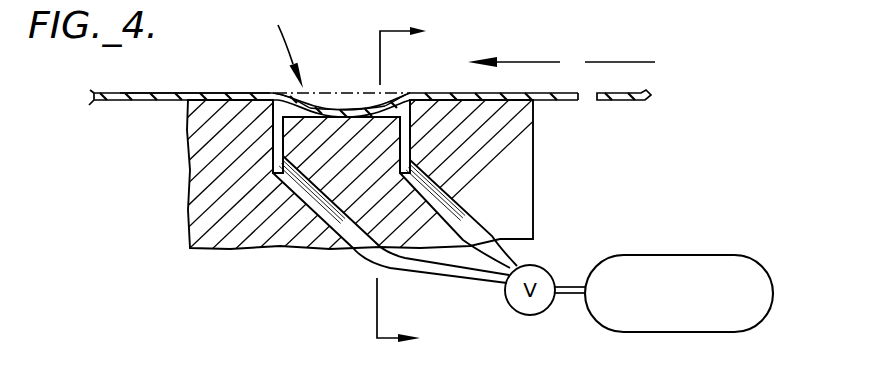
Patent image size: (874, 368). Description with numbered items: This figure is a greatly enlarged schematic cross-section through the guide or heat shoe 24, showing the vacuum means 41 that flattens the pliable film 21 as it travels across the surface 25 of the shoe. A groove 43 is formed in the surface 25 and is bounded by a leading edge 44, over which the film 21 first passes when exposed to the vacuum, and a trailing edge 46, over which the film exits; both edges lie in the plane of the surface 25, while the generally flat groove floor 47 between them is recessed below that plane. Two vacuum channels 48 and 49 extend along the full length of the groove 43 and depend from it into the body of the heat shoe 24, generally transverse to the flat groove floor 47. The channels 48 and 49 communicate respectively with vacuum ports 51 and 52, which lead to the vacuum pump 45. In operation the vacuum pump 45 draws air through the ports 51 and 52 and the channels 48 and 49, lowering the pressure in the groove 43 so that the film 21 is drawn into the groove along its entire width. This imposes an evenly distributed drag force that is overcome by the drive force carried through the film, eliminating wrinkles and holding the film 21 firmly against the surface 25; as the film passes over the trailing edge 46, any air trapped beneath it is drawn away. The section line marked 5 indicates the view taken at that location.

The film 21 is at (122, 93).
The guide (heat shoe) 24 is at (302, 191).
The surface 25 is at (213, 93).
The vacuum means 41 is at (275, 53).
The groove 43 is at (366, 104).
The leading edge 44 is at (410, 99).
The vacuum pump 45 is at (677, 256).
The trailing edge 46 is at (274, 96).
The groove floor 47 is at (351, 109).
The vacuum channel 48 is at (275, 145).
The vacuum channel 49 is at (408, 124).
The vacuum port 51 is at (356, 240).
The vacuum port 52 is at (455, 224).
The section line 5- 5 is at (411, 189).